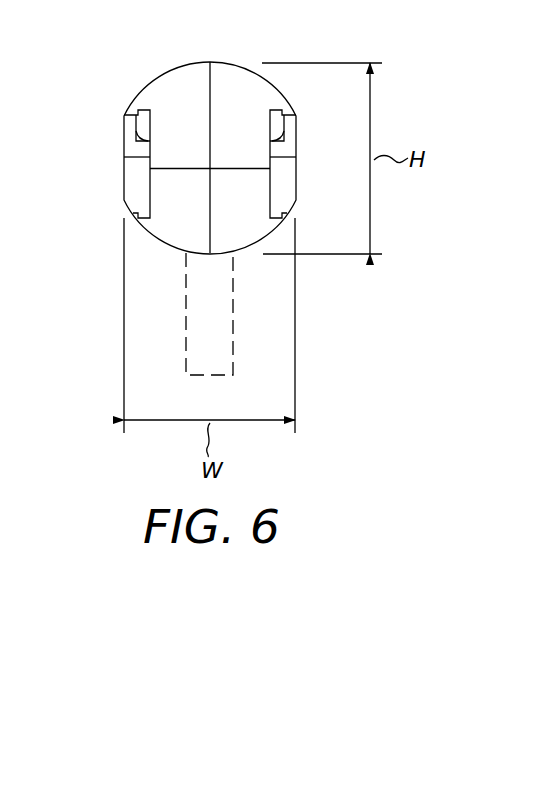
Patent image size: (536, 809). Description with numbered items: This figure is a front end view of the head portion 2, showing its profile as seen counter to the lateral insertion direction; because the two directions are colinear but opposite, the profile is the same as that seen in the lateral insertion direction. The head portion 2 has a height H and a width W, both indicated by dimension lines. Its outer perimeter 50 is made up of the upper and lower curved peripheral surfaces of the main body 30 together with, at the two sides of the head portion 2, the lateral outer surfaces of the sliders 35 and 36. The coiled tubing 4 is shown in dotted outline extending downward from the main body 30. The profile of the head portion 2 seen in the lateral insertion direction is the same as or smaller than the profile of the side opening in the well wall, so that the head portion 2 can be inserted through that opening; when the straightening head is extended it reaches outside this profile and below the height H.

The head portion 2 is at (127, 70).
The outer perimeter 50 is at (172, 61).
The main body 30 is at (243, 80).
The slider 35 is at (133, 183).
The slider 36 is at (287, 183).
The coiled tubing 4 is at (187, 341).